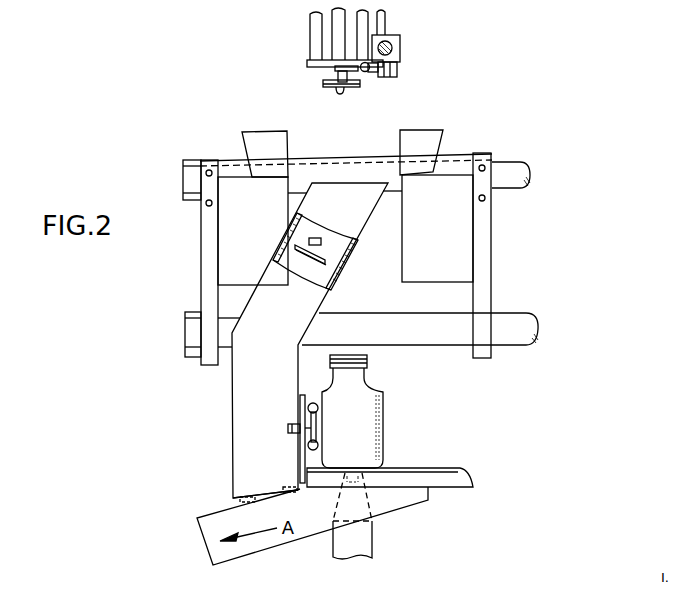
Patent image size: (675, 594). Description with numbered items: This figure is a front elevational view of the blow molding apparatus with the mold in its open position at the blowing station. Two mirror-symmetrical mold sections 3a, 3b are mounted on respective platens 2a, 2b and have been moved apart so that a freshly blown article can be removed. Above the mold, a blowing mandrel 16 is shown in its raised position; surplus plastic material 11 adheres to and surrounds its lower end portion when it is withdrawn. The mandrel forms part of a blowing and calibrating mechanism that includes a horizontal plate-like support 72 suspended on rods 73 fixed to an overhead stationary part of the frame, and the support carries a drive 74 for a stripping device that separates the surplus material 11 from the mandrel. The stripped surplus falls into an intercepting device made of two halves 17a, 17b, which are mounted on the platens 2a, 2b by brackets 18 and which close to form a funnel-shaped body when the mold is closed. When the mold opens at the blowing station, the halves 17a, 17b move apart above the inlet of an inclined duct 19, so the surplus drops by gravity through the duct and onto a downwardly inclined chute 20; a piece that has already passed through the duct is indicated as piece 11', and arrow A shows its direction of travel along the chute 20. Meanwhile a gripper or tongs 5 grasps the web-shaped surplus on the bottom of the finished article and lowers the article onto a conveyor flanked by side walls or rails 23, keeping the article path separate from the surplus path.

The blowing mandrel 16 is at (330, 32).
The rods 73 is at (360, 25).
The drive 74 is at (401, 56).
The plate-like support 72 is at (307, 68).
The surplus plastic material 11 is at (357, 97).
The piece of surplus material 11' is at (339, 266).
The portion of intercepting device 17a is at (245, 132).
The portion of intercepting device 17b is at (440, 128).
The brackets 18 is at (487, 163).
The platen 2a is at (210, 255).
The platen 2b is at (488, 255).
The mold section 3a is at (238, 233).
The mold section 3b is at (428, 229).
The duct 19 is at (253, 383).
The side walls or rails 23 is at (312, 402).
The chute 20 is at (215, 512).
The gripper or tongs 5 is at (365, 542).